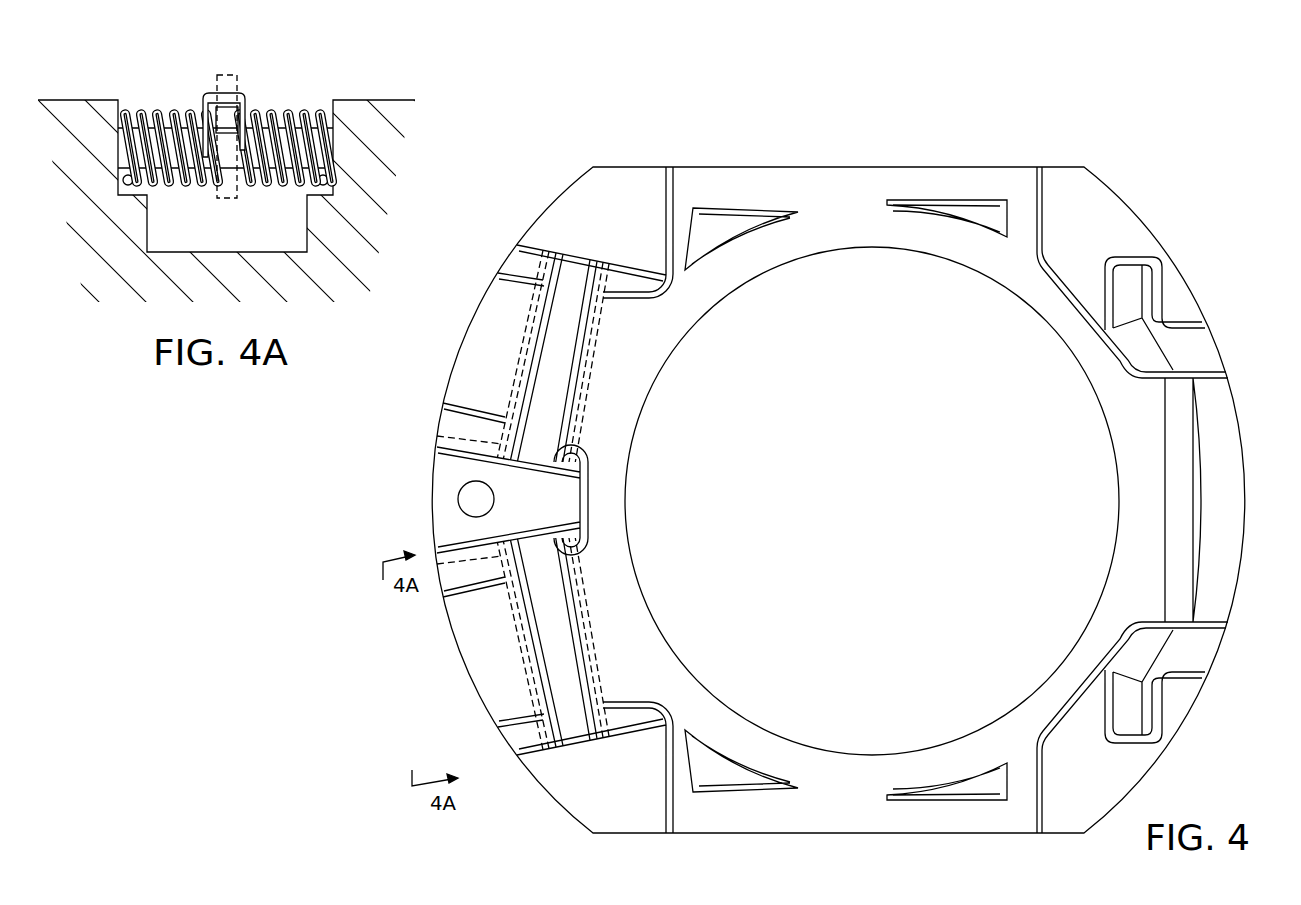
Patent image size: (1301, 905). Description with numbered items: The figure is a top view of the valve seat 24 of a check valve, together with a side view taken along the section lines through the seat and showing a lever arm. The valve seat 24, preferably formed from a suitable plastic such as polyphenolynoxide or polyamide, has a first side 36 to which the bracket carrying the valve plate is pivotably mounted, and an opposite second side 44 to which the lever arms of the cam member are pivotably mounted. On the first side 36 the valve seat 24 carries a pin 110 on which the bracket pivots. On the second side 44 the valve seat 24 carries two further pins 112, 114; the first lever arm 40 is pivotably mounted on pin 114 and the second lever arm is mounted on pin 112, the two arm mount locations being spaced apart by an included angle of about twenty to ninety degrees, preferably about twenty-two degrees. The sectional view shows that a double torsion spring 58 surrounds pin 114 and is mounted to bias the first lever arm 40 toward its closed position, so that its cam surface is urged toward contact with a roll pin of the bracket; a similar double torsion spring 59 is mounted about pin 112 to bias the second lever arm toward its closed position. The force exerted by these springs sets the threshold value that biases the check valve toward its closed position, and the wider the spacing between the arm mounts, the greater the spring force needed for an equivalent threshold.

In FIG. 4, the valve seat 24 is at (1115, 196).
In FIG. 4, the first side 36 is at (1230, 612).
In FIG. 4A, the first lever arm 40 is at (228, 74).
In FIG. 4, the second side 44 is at (435, 491).
In FIG. 4A, the double torsion spring 58 is at (307, 113).
In FIG. 4, the double torsion spring 58 is at (517, 642).
In FIG. 4, the double torsion spring 59 is at (510, 402).
In FIG. 4, the pin 110 is at (1181, 414).
In FIG. 4, the pin 112 is at (537, 315).
In FIG. 4A, the pin 114 is at (332, 103).
In FIG. 4, the pin 114 is at (526, 631).